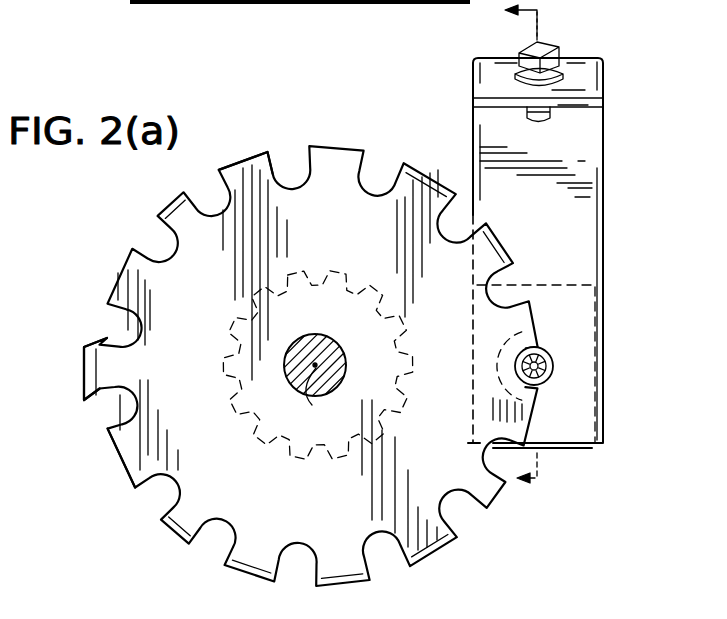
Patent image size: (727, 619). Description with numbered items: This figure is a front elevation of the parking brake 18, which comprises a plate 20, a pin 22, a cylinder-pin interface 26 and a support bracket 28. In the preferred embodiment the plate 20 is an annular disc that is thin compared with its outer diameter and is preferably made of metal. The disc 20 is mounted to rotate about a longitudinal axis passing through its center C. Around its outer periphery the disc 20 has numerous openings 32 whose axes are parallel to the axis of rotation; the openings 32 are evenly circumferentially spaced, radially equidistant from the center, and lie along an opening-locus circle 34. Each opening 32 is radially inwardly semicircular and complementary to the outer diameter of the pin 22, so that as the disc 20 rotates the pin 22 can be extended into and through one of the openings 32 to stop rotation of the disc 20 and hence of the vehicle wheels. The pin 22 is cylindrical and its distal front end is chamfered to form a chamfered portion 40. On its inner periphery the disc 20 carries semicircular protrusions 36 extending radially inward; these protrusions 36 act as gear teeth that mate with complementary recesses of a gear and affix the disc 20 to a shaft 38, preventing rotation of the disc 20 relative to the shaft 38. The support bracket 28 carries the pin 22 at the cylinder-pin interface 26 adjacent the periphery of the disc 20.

The parking brake 18 is at (83, 258).
The plate 20 is at (355, 573).
The pin 22 is at (547, 362).
The cylinder-pin interface 26 is at (560, 380).
The support bracket 28 is at (578, 213).
The openings 32 is at (113, 408).
The opening-locus circle 34 is at (259, 150).
The protrusions 36 is at (295, 453).
The shaft 38 is at (345, 318).
The chamfered portion 40 is at (563, 430).